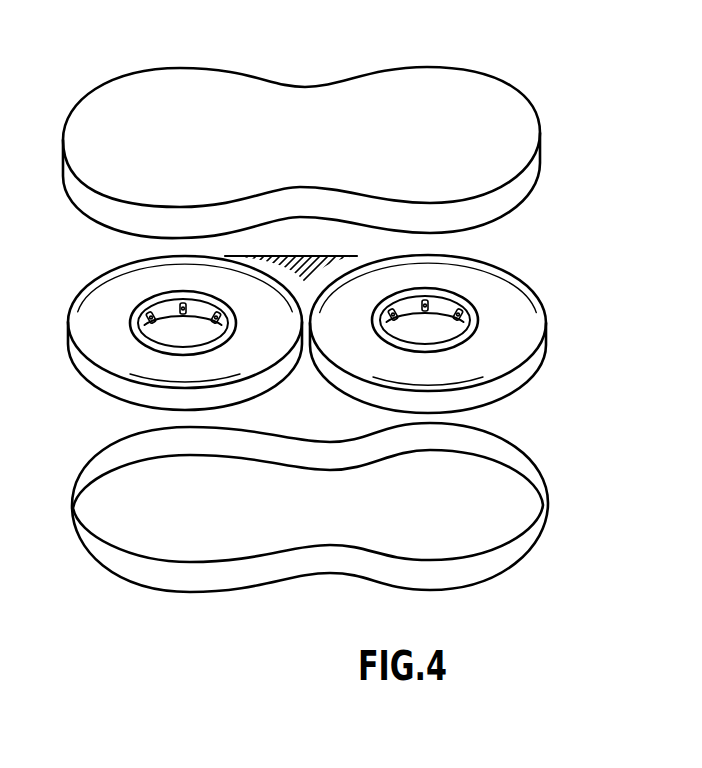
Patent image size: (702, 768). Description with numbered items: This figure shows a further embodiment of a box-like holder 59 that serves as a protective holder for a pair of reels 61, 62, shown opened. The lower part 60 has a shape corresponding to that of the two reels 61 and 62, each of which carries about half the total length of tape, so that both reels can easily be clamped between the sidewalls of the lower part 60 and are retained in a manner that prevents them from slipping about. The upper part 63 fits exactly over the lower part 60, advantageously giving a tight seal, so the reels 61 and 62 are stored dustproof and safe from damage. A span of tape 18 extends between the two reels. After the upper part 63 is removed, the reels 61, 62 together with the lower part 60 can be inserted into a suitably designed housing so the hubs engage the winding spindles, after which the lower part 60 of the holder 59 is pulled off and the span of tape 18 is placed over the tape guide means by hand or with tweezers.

The upper part 63 is at (475, 88).
The reel 61 is at (107, 292).
The reel 62 is at (513, 284).
The span of tape 18 is at (326, 260).
The holder 59 is at (330, 317).
The lower part 60 is at (523, 462).